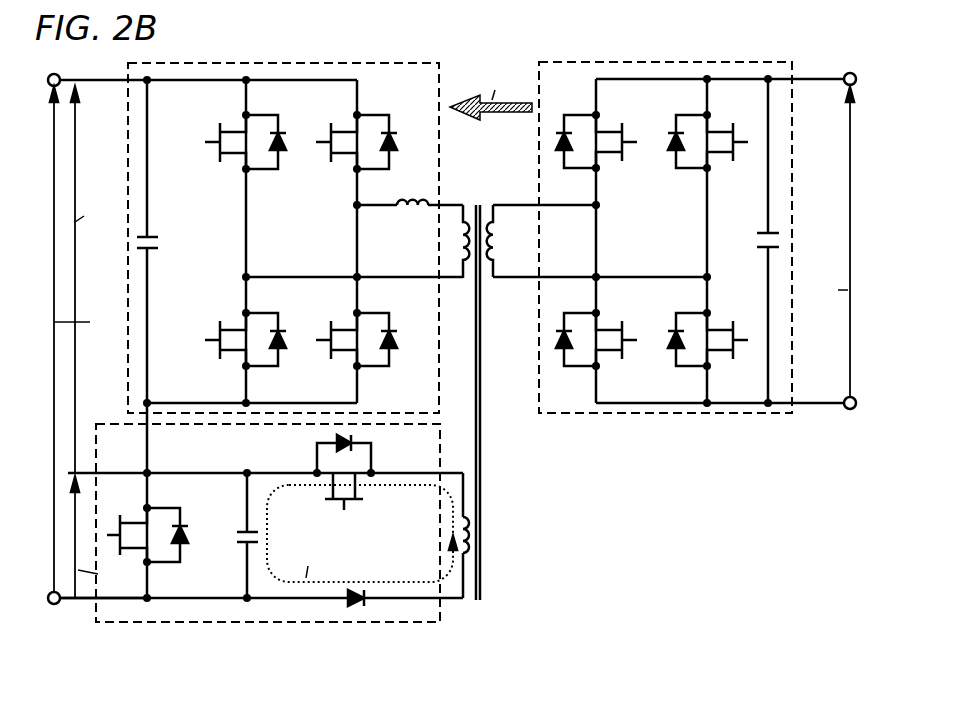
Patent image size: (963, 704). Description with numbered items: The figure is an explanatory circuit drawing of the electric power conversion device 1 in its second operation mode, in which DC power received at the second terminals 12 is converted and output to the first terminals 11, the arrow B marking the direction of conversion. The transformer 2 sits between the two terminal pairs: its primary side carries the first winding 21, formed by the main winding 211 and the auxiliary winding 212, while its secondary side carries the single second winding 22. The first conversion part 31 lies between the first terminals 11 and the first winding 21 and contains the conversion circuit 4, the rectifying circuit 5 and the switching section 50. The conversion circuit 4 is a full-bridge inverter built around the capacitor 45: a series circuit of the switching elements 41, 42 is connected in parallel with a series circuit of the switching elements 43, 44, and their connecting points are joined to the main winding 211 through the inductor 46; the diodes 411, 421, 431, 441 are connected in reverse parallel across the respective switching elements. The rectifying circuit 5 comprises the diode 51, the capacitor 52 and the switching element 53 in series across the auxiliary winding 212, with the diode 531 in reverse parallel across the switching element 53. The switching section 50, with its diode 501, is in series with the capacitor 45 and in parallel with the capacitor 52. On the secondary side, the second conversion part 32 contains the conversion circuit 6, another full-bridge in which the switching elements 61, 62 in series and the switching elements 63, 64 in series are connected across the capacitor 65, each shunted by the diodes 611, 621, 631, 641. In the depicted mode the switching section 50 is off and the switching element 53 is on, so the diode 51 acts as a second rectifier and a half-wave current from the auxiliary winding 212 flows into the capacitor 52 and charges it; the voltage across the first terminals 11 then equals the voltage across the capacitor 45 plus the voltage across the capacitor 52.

The electric power conversion device 1 is at (675, 521).
The transformer 2 is at (482, 198).
The conversion circuit 4 is at (439, 403).
The rectifying circuit 5 is at (440, 458).
The conversion circuit 6 is at (673, 237).
The first terminals 11 is at (60, 77).
The second terminals 12 is at (850, 72).
The first winding 21 is at (427, 383).
The second winding 22 is at (497, 245).
The first conversion part 31 is at (513, 400).
The second conversion part 32 is at (673, 237).
The switching element 41 is at (214, 162).
The switching element 42 is at (214, 352).
The switching element 43 is at (332, 167).
The switching element 44 is at (327, 364).
The capacitor 45 is at (158, 245).
The inductor 46 is at (415, 196).
The switching section 50 is at (112, 516).
The diode 51 is at (355, 587).
The capacitor 52 is at (238, 545).
The switching element 53 is at (340, 504).
The switching element 61 is at (740, 128).
The switching element 62 is at (741, 348).
The switching element 63 is at (629, 130).
The switching element 64 is at (630, 348).
The capacitor 65 is at (757, 241).
The main winding 211 is at (458, 242).
The auxiliary winding 212 is at (460, 527).
The diode 411 is at (282, 125).
The diode 421 is at (283, 322).
The diode 431 is at (392, 125).
The diode 441 is at (392, 326).
The diode 501 is at (187, 531).
The diode 531 is at (340, 441).
The diode 611 is at (664, 158).
The diode 621 is at (668, 323).
The diode 631 is at (558, 124).
The diode 641 is at (557, 358).